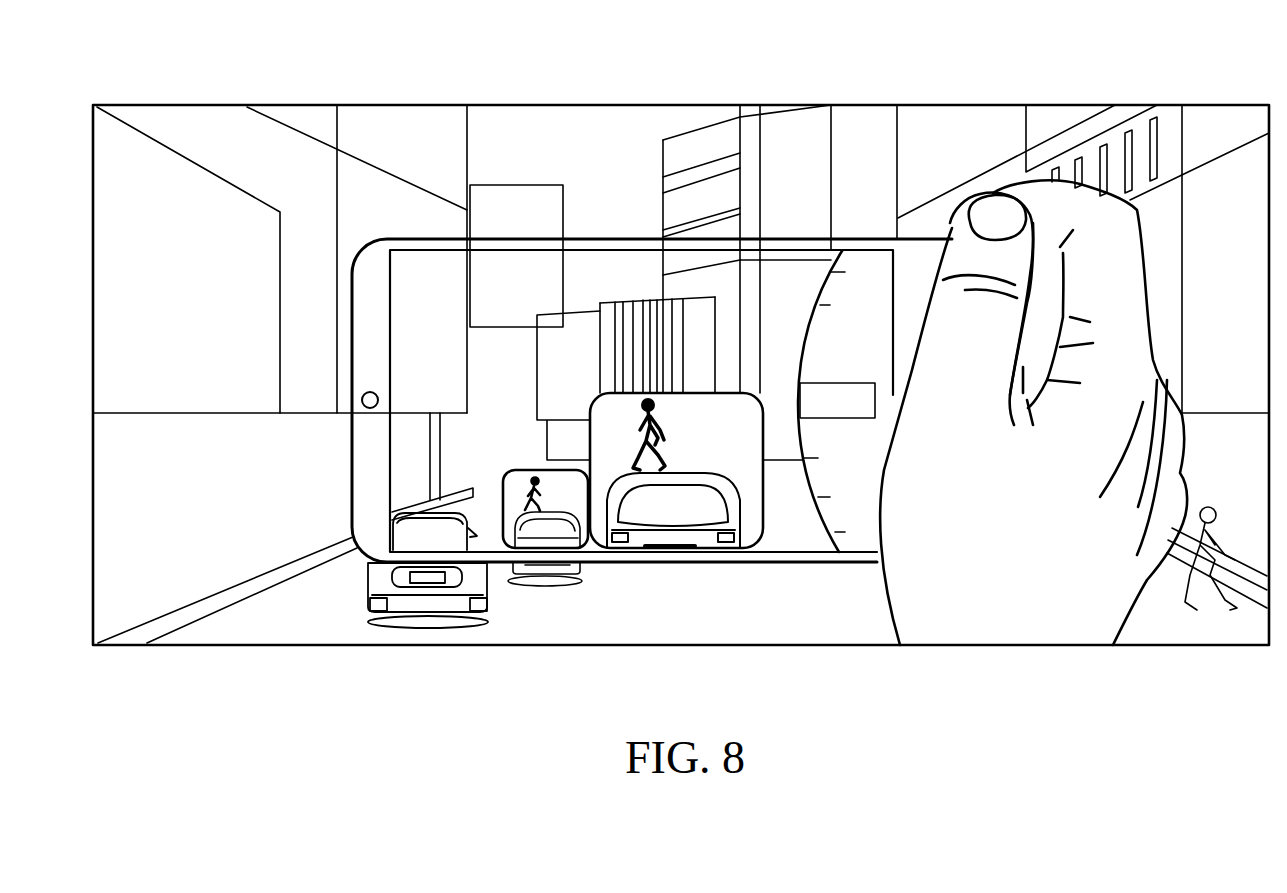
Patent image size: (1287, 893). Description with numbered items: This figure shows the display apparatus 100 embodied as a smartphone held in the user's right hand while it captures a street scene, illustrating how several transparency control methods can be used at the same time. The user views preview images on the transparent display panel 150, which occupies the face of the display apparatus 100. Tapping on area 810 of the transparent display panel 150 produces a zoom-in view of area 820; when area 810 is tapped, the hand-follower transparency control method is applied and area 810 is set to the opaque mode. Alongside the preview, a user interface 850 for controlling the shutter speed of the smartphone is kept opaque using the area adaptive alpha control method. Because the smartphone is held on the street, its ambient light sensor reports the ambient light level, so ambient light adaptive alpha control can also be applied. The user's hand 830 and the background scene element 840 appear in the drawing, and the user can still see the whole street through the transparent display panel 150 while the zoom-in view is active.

The display apparatus 100 is at (370, 290).
The transparent display panel 150 is at (797, 252).
The area 810 is at (530, 405).
The area 820 is at (735, 392).
The user hand 830 is at (964, 105).
The third object 840 is at (612, 290).
The user interface 850 is at (862, 340).